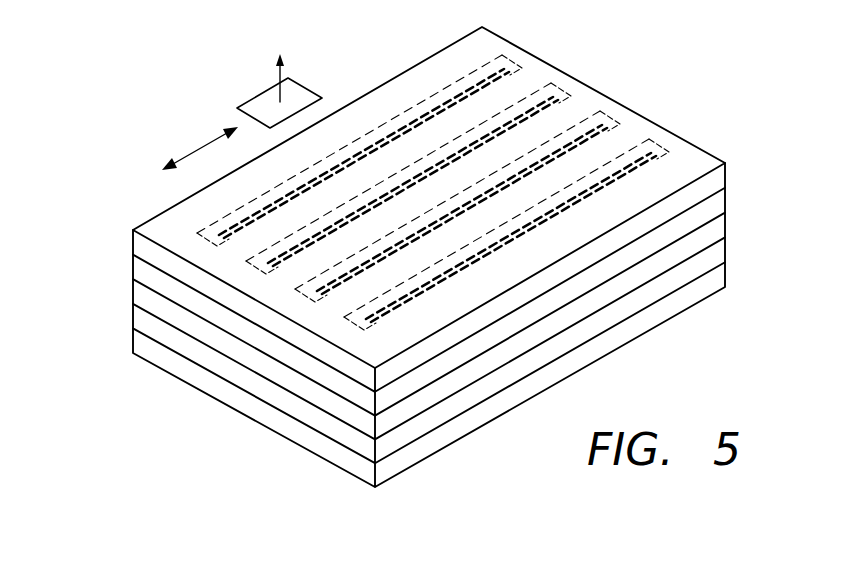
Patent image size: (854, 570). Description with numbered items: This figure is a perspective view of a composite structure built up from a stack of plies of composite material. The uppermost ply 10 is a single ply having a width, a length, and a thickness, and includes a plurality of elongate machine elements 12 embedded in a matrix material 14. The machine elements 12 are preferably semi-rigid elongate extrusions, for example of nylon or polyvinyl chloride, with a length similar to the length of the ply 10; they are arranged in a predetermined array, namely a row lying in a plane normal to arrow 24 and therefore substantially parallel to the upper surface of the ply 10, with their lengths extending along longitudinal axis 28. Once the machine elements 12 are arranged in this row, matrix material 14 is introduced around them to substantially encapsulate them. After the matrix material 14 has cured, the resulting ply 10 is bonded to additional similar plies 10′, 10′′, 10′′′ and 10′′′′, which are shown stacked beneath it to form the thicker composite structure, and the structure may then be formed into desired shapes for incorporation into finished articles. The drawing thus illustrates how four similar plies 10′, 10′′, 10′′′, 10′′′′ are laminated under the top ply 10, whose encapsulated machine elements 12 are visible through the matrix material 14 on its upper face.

The ply 10 is at (133, 243).
The additional similar ply 10′ is at (133, 268).
The additional similar ply 10′′ is at (133, 292).
The additional similar ply 10′′′ is at (133, 316).
The additional similar ply 10′′′′ is at (133, 340).
The machine elements 12 is at (218, 217).
The matrix material 14 is at (388, 98).
The arrow 24 is at (278, 75).
The longitudinal axis 28 is at (202, 148).